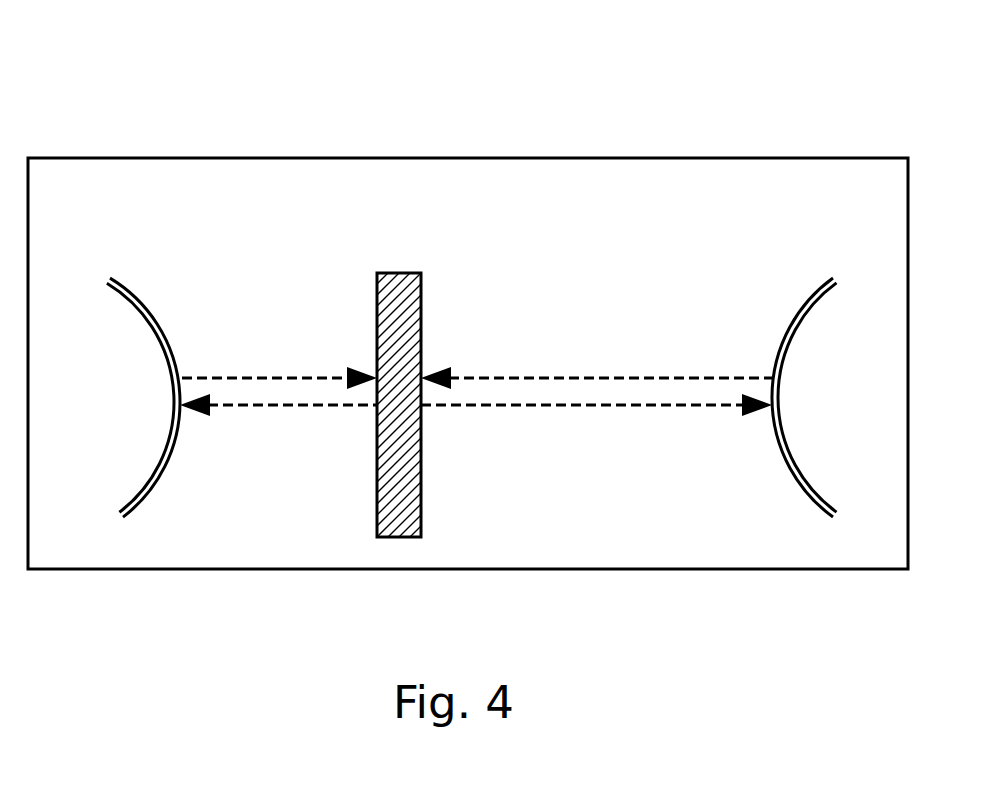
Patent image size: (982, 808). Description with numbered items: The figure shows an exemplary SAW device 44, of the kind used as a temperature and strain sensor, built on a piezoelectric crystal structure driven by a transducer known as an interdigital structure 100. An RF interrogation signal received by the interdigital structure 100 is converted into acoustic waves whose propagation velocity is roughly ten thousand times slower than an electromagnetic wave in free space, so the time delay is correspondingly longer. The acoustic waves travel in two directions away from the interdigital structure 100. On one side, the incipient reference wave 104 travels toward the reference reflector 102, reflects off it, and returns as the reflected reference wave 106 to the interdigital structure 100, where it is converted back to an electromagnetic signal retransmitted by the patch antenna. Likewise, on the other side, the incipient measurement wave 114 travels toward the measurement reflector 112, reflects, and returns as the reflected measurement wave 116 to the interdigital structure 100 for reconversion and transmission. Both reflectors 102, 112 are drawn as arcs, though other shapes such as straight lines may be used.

The SAW device 44 is at (753, 108).
The interdigital structure 100 is at (400, 272).
The reference reflector 102 is at (138, 293).
The incipient reference wave 104 is at (292, 405).
The reflected reference wave 106 is at (250, 378).
The measurement reflector 112 is at (800, 308).
The incipient measurement wave 114 is at (595, 405).
The reflected measurement wave 116 is at (645, 378).